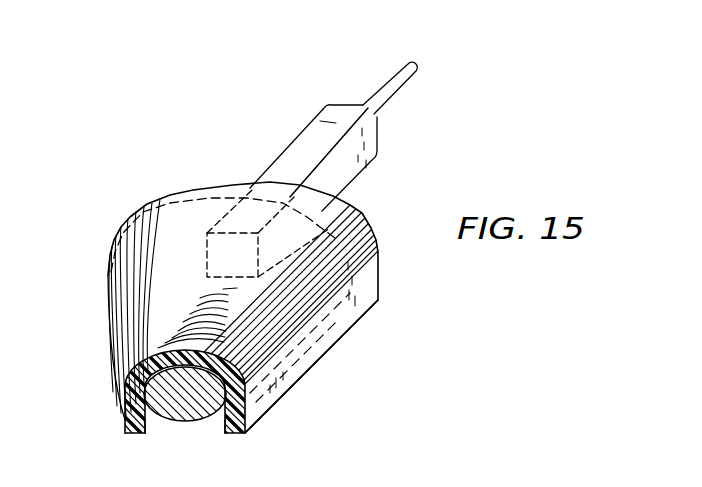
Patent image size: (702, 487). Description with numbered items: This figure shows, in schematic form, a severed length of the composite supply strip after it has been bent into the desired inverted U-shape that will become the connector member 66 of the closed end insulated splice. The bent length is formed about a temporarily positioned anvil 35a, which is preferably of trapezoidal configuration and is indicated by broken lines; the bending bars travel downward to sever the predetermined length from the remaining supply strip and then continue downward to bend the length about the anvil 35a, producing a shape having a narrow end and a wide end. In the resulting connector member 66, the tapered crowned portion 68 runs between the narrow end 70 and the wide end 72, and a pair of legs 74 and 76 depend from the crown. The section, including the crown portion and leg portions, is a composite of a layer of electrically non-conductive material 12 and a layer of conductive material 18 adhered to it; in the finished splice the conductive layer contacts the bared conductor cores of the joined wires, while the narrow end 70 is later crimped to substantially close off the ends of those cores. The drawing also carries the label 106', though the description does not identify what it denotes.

The connector member 66 is at (122, 197).
The wide end 72 is at (357, 212).
The layer of electrically non-conductive material 12 is at (352, 297).
The leg 74 is at (127, 422).
The leg 76 is at (250, 412).
The layer of conductive material 18 is at (143, 432).
The anvil 35a is at (203, 412).
The tapered crowned portion 68 is at (184, 348).
The narrow end 70 is at (177, 436).
The housing 106' is at (321, 366).